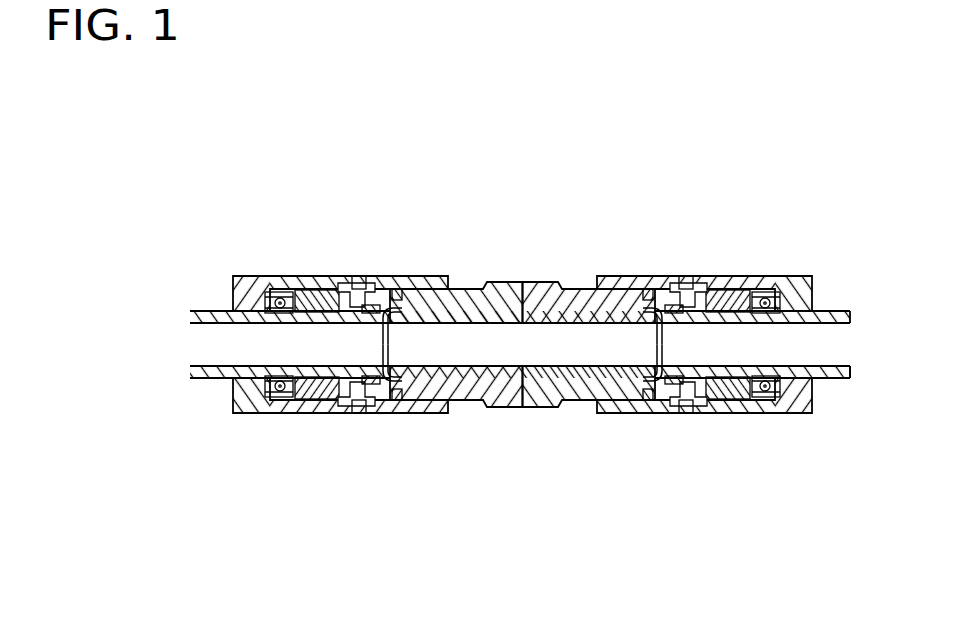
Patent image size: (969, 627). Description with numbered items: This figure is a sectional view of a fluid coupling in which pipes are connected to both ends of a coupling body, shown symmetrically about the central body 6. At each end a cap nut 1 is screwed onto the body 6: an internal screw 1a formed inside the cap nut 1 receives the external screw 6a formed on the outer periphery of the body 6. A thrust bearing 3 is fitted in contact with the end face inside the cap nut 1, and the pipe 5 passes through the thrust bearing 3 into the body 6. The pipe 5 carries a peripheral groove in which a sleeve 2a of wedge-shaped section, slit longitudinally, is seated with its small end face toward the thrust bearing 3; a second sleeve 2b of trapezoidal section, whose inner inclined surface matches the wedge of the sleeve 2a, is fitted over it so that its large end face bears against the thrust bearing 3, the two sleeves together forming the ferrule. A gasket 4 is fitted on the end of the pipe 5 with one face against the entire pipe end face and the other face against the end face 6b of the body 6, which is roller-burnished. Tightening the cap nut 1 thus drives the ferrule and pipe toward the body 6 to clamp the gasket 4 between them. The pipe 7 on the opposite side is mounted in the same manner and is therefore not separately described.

The cap nut 1 is at (325, 276).
The internal screw 1a is at (387, 413).
The sleeve 2a is at (372, 276).
The sleeve 2b is at (335, 276).
The thrust bearing 3 is at (278, 276).
The gasket 4 is at (396, 276).
The pipe 5 is at (210, 378).
The body 6 is at (525, 282).
The external screw 6a is at (470, 401).
The end face 6b is at (360, 413).
The pipe 7 is at (850, 378).